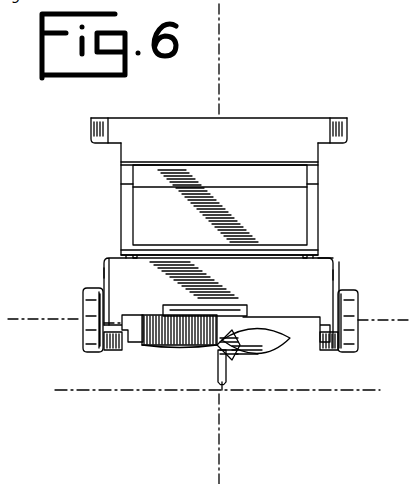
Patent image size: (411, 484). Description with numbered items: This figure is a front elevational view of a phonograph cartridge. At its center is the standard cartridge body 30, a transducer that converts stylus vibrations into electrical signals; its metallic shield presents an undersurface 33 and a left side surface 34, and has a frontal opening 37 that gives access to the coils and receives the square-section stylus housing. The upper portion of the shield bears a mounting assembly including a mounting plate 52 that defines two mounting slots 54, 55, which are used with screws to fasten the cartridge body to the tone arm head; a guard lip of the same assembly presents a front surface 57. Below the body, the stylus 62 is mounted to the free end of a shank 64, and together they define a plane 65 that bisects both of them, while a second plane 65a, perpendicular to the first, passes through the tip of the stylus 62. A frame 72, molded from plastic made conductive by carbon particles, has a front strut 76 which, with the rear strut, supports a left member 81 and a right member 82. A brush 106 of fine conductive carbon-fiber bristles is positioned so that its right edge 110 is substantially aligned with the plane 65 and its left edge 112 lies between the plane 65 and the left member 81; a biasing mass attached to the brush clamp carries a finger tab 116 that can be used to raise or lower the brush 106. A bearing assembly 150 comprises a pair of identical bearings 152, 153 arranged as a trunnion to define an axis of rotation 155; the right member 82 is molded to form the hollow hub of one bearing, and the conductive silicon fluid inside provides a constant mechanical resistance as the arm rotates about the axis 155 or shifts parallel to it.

The cartridge body 30 is at (340, 217).
The undersurface 33 is at (245, 368).
The left side surface 34 is at (125, 256).
The frontal opening 37 is at (265, 335).
The mounting plate 52 is at (325, 116).
The mounting slot 54 is at (102, 118).
The mounting slot 55 is at (342, 117).
The front surface 57 is at (145, 209).
The phonograph stylus 62 is at (372, 0).
The shank 64 is at (180, 348).
The plane 65 is at (215, 31).
The plane 65a is at (86, 398).
The frame 72 is at (342, 261).
The front strut 76 is at (318, 268).
The left member 81 is at (103, 273).
The right member 82 is at (340, 279).
The brush 106 is at (146, 352).
The right edge 110 is at (232, 317).
The left edge 112 is at (141, 316).
The finger tab 116 is at (397, 375).
The bearing assembly 150 is at (58, 349).
The bearing 152 is at (72, 334).
The bearing 153 is at (368, 332).
The axis of rotation 155 is at (58, 306).